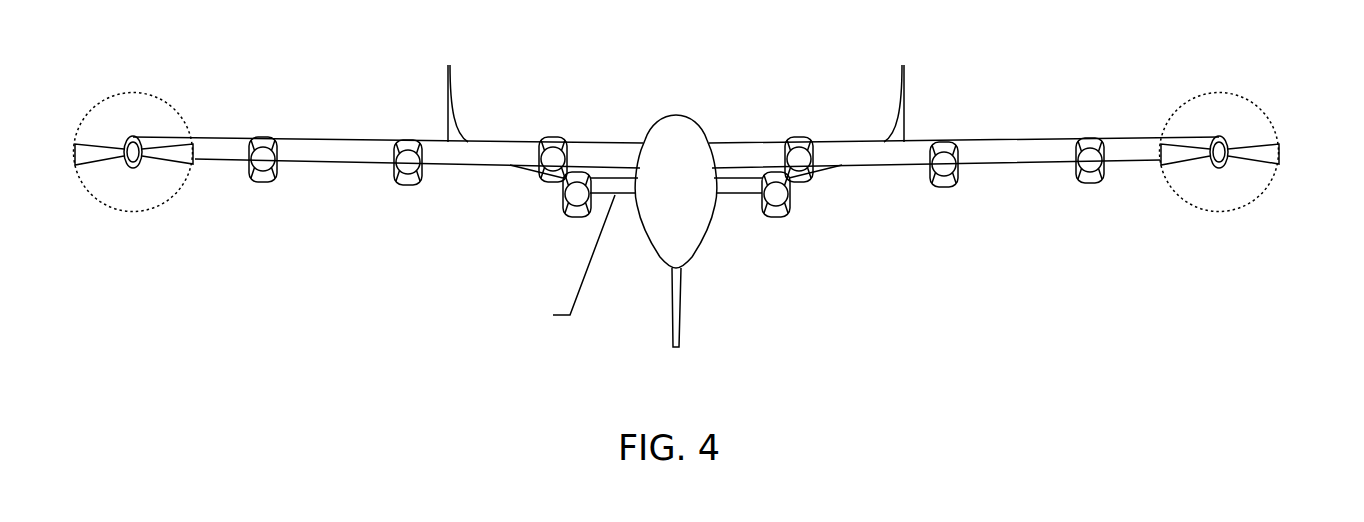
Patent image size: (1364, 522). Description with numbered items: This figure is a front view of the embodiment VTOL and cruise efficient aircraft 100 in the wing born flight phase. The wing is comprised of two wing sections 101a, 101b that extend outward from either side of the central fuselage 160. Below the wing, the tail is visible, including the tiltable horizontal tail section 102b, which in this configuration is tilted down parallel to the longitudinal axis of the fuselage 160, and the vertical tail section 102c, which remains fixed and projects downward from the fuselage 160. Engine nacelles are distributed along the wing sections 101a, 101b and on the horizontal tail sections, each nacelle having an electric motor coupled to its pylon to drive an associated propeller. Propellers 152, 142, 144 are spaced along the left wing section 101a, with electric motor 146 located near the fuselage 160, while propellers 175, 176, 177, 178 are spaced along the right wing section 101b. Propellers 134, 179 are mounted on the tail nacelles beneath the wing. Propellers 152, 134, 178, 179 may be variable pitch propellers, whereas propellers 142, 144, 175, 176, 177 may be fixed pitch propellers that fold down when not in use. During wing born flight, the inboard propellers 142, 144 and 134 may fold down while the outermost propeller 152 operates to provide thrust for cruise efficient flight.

The aircraft 100 is at (712, 192).
The wing section 101a is at (307, 137).
The wing section 101b is at (1002, 138).
The horizontal tail section 102b is at (737, 196).
The vertical tail section 102c is at (682, 313).
The propeller 134 is at (578, 216).
The propeller 142 is at (260, 181).
The propeller 144 is at (407, 184).
The electric motor 146 is at (552, 181).
The propeller 152 is at (165, 162).
The fuselage 160 is at (677, 116).
The propeller 175 is at (800, 181).
The propeller 176 is at (941, 186).
The propeller 177 is at (1090, 182).
The propeller 178 is at (1270, 167).
The propeller 179 is at (777, 216).